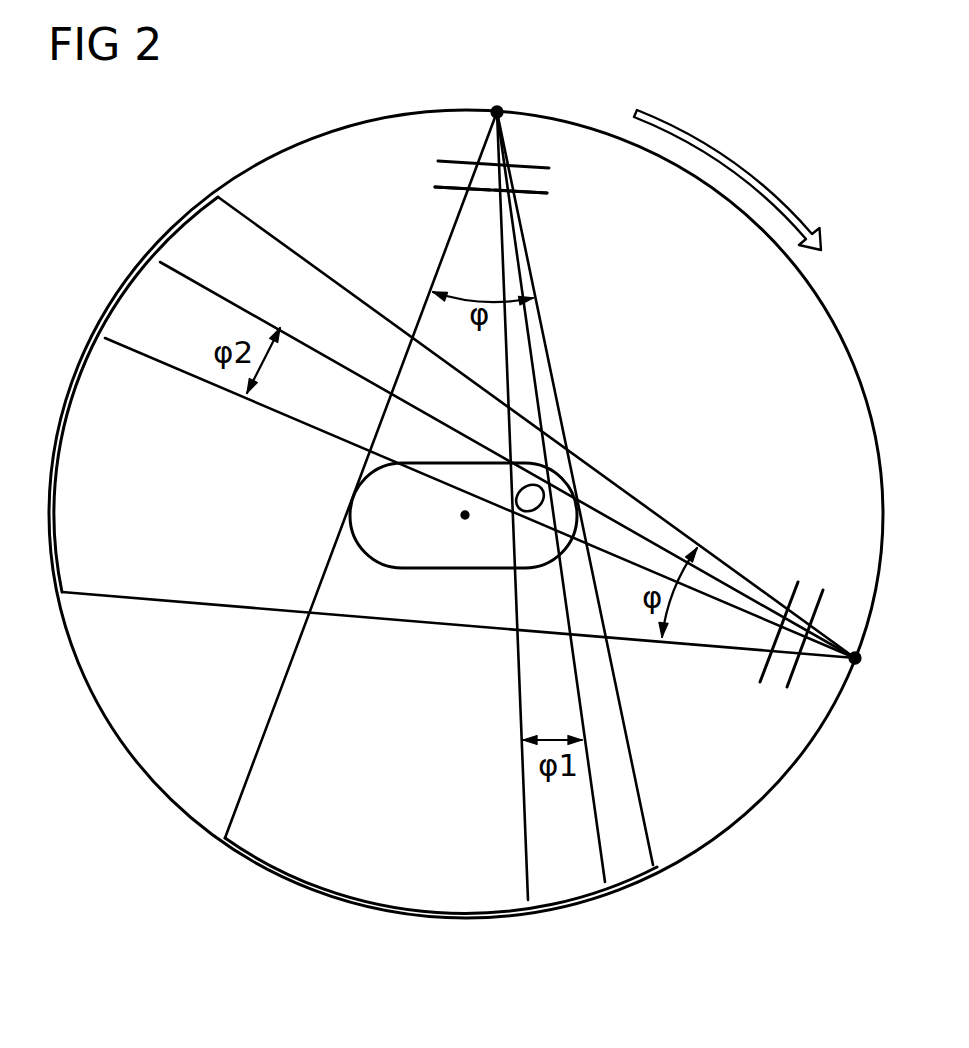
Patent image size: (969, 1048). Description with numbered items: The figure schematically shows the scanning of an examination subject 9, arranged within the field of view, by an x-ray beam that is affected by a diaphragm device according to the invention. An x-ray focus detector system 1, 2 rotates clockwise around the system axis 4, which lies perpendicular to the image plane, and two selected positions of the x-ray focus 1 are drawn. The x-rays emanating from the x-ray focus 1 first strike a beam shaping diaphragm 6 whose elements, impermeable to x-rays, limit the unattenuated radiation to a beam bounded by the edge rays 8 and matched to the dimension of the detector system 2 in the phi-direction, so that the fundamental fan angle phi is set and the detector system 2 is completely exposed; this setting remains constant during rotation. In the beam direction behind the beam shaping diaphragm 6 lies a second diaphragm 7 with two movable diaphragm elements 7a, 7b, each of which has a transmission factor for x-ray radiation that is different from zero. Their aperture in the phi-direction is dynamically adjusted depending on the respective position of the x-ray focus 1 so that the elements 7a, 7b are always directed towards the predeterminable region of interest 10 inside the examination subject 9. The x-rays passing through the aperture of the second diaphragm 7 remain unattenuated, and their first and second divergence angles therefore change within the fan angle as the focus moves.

The x-ray focus 1 is at (497, 110).
The detector system 2 is at (147, 270).
The system axis 4 is at (462, 517).
The beam shaping diaphragm 6 is at (453, 163).
The second diaphragm 7 is at (556, 190).
The movable diaphragm element 7a is at (447, 191).
The movable diaphragm element 7b is at (536, 196).
The edge rays 8 is at (602, 470).
The examination subject 9 is at (483, 570).
The region of interest 10 is at (528, 510).